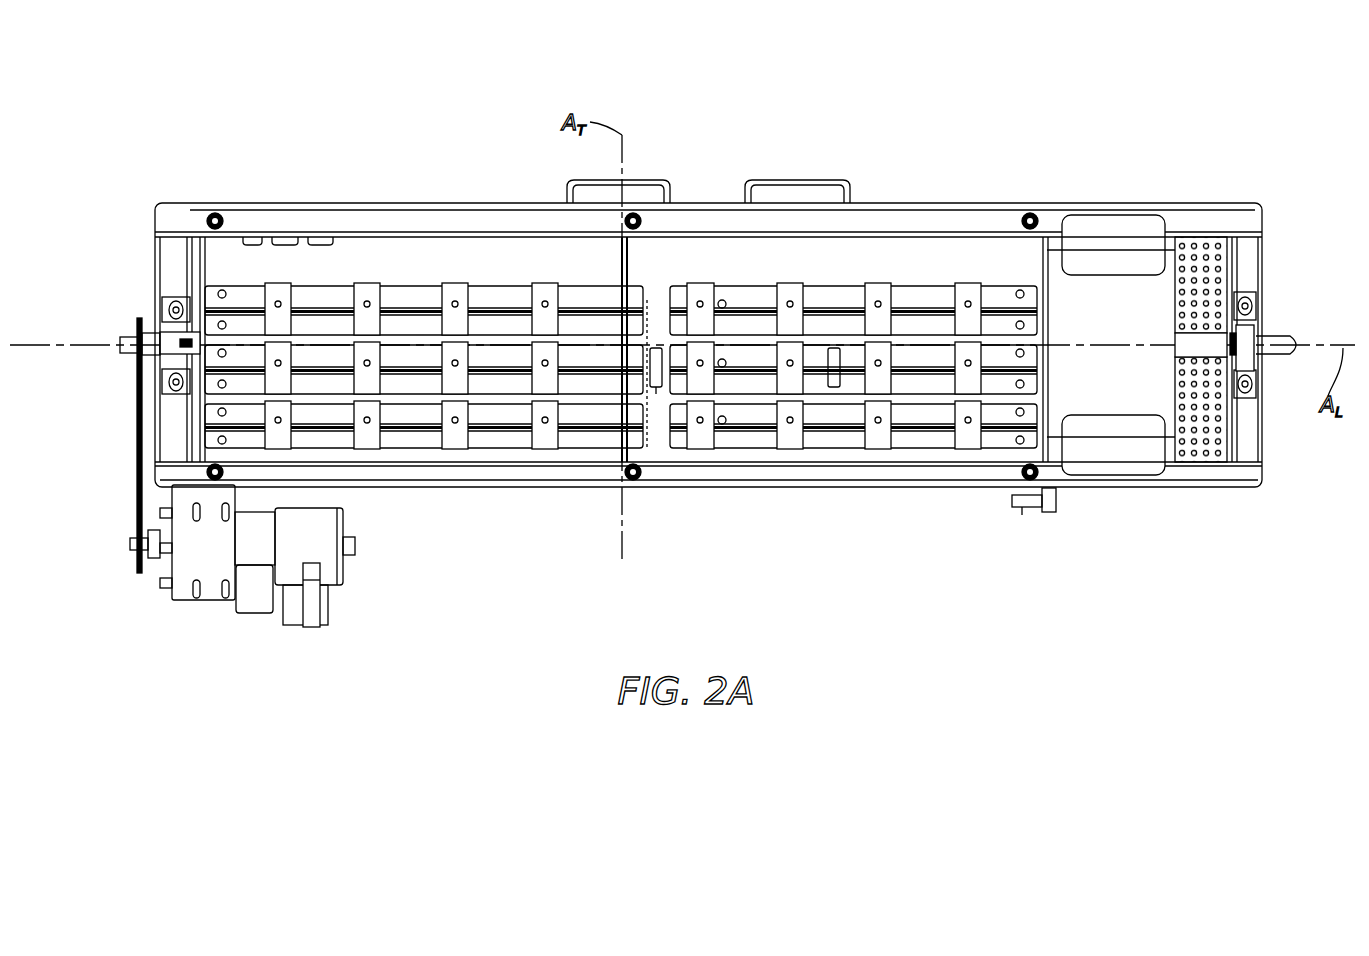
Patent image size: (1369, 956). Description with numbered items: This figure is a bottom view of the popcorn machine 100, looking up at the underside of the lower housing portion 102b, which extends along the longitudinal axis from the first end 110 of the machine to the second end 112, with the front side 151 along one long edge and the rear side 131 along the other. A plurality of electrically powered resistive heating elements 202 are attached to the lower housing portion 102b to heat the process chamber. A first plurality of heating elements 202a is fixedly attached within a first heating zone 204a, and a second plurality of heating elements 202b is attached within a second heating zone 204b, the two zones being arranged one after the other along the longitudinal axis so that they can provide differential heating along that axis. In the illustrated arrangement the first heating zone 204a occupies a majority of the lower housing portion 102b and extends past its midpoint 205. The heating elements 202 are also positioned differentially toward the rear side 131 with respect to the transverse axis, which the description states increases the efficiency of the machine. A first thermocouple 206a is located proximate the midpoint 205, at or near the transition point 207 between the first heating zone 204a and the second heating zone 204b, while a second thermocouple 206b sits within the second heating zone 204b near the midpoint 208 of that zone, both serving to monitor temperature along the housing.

The popcorn machine 100 is at (812, 88).
The lower housing portion 102b is at (920, 268).
The first end 110 is at (108, 356).
The second end 112 is at (1284, 302).
The rear side 131 is at (705, 498).
The front side 151 is at (686, 158).
The heating elements 202 is at (413, 430).
The first plurality of heating elements 202a is at (405, 270).
The second plurality of heating elements 202b is at (805, 282).
The first heating zone 204a is at (377, 463).
The second heating zone 204b is at (787, 463).
The midpoint 205 is at (618, 462).
The first thermocouple 206a is at (655, 347).
The second thermocouple 206b is at (833, 348).
The transition point 207 is at (657, 396).
The midpoint of the second heating zone 208 is at (877, 462).